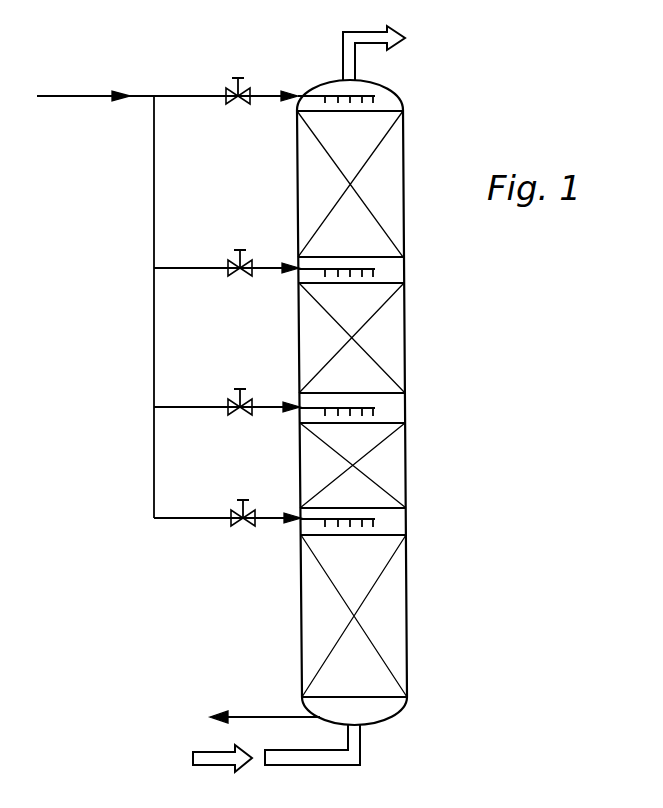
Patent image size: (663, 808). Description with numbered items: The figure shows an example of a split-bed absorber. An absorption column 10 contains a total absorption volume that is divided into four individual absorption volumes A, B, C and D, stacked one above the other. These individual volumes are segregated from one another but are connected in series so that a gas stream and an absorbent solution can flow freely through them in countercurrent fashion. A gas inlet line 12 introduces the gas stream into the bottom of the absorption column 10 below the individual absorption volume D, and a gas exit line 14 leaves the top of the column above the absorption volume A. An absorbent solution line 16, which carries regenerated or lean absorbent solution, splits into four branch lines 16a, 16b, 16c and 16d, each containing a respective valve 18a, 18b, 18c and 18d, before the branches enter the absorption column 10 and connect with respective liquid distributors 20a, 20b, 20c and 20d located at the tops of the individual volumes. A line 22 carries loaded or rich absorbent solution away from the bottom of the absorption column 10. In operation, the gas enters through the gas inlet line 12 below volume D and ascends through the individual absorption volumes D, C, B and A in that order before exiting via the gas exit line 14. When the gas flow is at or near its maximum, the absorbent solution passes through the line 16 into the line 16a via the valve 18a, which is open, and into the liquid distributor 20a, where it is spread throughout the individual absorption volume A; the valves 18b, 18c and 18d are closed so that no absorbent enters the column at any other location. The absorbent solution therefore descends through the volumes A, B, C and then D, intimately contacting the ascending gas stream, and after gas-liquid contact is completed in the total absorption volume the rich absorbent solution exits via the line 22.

The absorption column 10 is at (301, 622).
The gas inlet line 12 is at (312, 766).
The gas exit line 14 is at (359, 32).
The absorbent solution line 16 is at (73, 95).
The line 16a is at (270, 98).
The line 16b is at (270, 270).
The line 16c is at (272, 409).
The line 16d is at (272, 520).
The valve 18a is at (232, 85).
The valve 18b is at (236, 259).
The valve 18c is at (236, 398).
The valve 18d is at (240, 509).
The liquid distributor 20a is at (375, 96).
The liquid distributor 20b is at (375, 270).
The liquid distributor 20c is at (375, 409).
The liquid distributor 20d is at (375, 521).
The line 22 is at (280, 716).
The individual absorption volume A is at (403, 172).
The individual absorption volume B is at (404, 353).
The individual absorption volume C is at (406, 465).
The individual absorption volume D is at (407, 652).